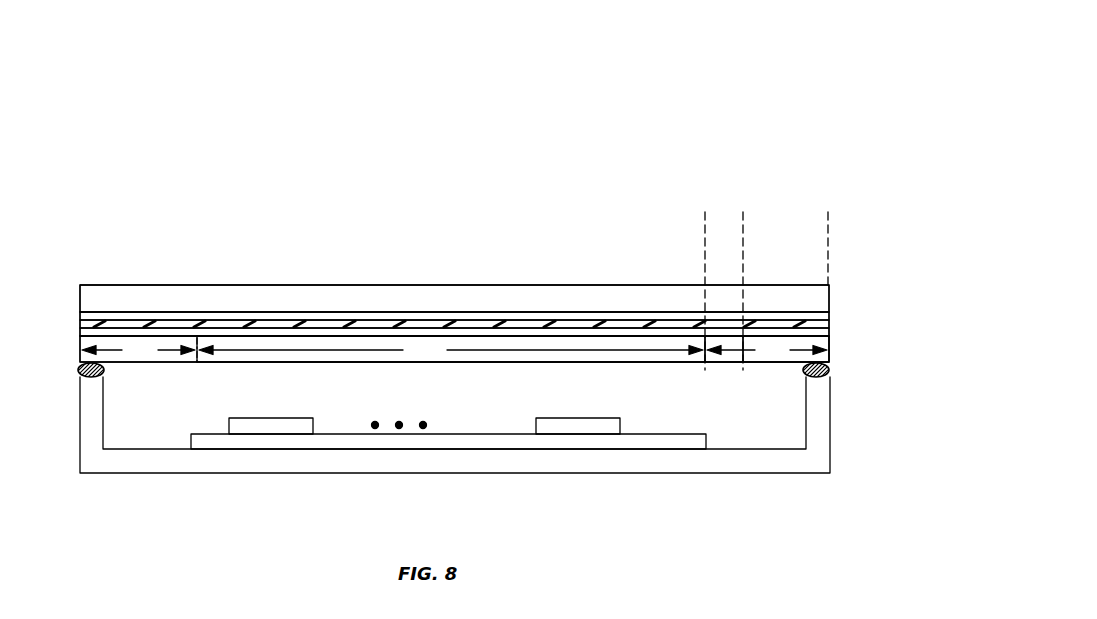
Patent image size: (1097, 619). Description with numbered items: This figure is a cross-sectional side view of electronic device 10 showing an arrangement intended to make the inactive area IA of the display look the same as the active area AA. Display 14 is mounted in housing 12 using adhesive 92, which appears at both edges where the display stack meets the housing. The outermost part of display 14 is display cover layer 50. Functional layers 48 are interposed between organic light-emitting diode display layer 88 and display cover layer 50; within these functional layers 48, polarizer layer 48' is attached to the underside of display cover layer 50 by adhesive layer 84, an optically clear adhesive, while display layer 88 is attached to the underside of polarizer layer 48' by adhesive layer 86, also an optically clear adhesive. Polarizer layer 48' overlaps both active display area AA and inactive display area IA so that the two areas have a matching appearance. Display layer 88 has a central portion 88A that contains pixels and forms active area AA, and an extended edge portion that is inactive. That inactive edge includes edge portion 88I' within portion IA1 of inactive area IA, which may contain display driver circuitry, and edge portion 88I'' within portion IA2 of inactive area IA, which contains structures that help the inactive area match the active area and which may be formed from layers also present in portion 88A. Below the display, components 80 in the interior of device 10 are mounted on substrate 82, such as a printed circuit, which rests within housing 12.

The electronic device 10 is at (703, 81).
The display 14 is at (354, 226).
The display cover layer 50 is at (82, 300).
The adhesive layer 84 is at (829, 316).
The polarizer layer 48' is at (489, 317).
The adhesive layer 86 is at (829, 334).
The functional layers 48 is at (437, 324).
The organic light-emitting diode display layer 88 is at (498, 365).
The portion of display layer 88A is at (655, 364).
The edge portion 88I' is at (722, 372).
The edge portion 88I'' is at (786, 372).
The inactive area IA is at (454, 350).
The active area AA is at (451, 350).
The portion of inactive area IA1 is at (743, 211).
The portion of inactive area IA2 is at (828, 211).
The adhesive 92 is at (80, 373).
The housing 12 is at (204, 463).
The substrate 82 is at (462, 441).
The components 80 is at (265, 418).